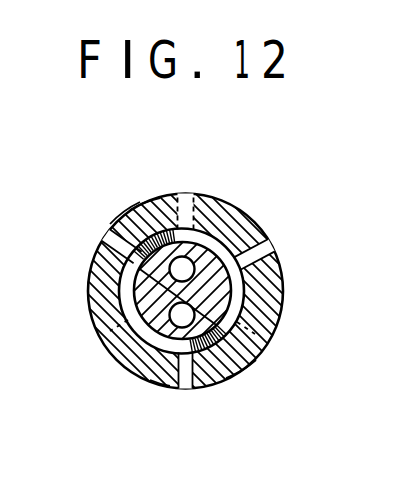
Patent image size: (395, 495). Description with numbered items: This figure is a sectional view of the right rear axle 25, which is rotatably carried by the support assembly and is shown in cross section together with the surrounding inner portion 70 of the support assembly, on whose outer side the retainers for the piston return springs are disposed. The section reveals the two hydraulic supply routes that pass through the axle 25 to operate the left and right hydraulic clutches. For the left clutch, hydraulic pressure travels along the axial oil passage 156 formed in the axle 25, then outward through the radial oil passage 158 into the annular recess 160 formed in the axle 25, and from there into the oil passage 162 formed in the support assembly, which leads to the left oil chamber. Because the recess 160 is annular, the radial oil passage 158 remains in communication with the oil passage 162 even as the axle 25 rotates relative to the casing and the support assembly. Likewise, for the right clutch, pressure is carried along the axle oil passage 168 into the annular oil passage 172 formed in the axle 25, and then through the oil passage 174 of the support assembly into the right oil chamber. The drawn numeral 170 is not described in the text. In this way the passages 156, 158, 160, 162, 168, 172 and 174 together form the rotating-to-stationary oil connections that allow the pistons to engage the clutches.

The right axle 25 is at (238, 240).
The inner portion 70 is at (148, 222).
The axial oil passage 156 is at (186, 315).
The radial oil passage 158 is at (233, 372).
The annular recess 160 is at (130, 366).
The oil passage 162 is at (112, 248).
The axle oil passage 168 is at (122, 277).
The outer surface 170 is at (125, 207).
The annular oil passage 172 is at (155, 378).
The oil passage 174 is at (190, 192).